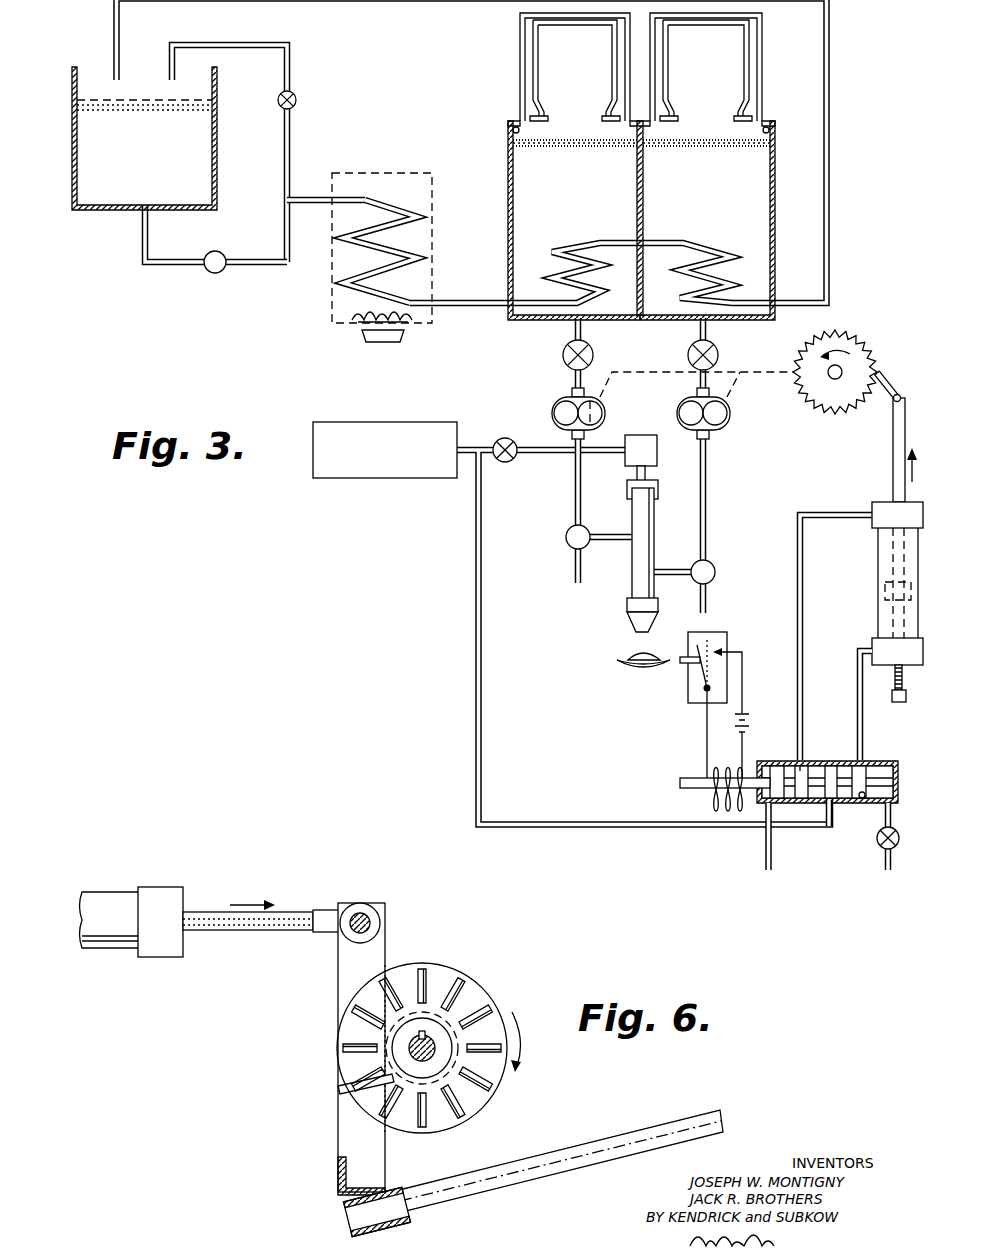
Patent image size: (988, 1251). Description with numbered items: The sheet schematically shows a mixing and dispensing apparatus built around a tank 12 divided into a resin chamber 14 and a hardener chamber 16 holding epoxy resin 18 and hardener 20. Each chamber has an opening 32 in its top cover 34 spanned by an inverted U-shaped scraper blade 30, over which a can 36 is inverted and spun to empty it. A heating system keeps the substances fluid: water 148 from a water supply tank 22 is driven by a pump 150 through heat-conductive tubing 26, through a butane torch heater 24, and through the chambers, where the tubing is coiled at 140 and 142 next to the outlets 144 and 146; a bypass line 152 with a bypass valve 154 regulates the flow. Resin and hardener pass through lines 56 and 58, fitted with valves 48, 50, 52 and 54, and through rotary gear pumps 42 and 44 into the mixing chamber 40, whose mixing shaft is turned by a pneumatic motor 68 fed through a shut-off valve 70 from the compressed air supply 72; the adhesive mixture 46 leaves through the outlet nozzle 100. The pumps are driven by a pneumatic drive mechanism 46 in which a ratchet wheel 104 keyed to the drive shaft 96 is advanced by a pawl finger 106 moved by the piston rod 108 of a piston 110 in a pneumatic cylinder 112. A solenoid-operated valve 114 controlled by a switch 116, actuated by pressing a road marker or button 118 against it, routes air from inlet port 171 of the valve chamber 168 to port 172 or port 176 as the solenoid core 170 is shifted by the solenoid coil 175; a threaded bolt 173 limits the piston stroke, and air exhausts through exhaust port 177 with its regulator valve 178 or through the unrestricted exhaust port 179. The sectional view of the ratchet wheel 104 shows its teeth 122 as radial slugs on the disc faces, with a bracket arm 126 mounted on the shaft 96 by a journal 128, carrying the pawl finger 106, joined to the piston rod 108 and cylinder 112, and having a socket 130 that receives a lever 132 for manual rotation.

In FIG. 3, the tank 12 is at (644, 220).
In FIG. 3, the resin chamber 14 is at (510, 207).
In FIG. 3, the hardener chamber 16 is at (775, 215).
In FIG. 3, the epoxy resin 18 is at (575, 178).
In FIG. 3, the hardener 20 is at (706, 178).
In FIG. 3, the water supply tank 22 is at (165, 138).
In FIG. 3, the butane torch heater 24 is at (432, 182).
In FIG. 3, the heat-conductive tubing 26 is at (272, 268).
In FIG. 3, the scraper blade 30 is at (535, 55).
In FIG. 3, the opening 32 is at (622, 120).
In FIG. 3, the top cover 34 is at (512, 130).
In FIG. 3, the can 36 is at (520, 40).
In FIG. 3, the mixing chamber 40 is at (631, 556).
In FIG. 3, the rotary gear pump 42 is at (555, 405).
In FIG. 3, the rotary gear pump 44 is at (732, 415).
In FIG. 3, the pneumatic drive system 46 is at (630, 655).
In FIG. 3, the resin shut-off valve 48 is at (593, 350).
In FIG. 3, the valve 50 is at (566, 540).
In FIG. 3, the valve 52 is at (718, 350).
In FIG. 3, the valve 54 is at (715, 570).
In FIG. 3, the resin line 56 is at (574, 480).
In FIG. 3, the hardener line 58 is at (648, 478).
In FIG. 3, the pneumatic motor 68 is at (640, 440).
In FIG. 3, the shut-off valve 70 is at (505, 438).
In FIG. 3, the compressed air supply 72 is at (322, 478).
In FIG. 3, the drive shaft 96 is at (842, 368).
In FIG. 6, the drive shaft 96 is at (432, 1042).
In FIG. 3, the outlet nozzle 100 is at (640, 625).
In FIG. 3, the ratchet wheel 104 is at (852, 333).
In FIG. 6, the ratchet wheel 104 is at (470, 978).
In FIG. 3, the pawl finger 106 is at (895, 385).
In FIG. 6, the pawl finger 106 is at (340, 1090).
In FIG. 3, the piston rod 108 is at (893, 460).
In FIG. 6, the piston rod 108 is at (245, 925).
In FIG. 3, the piston 110 is at (885, 591).
In FIG. 3, the pneumatic cylinder 112 is at (879, 613).
In FIG. 6, the pneumatic cylinder 112 is at (110, 895).
In FIG. 3, the solenoid-operated valve 114 is at (694, 790).
In FIG. 3, the switch 116 is at (690, 700).
In FIG. 3, the road marker or button 118 is at (638, 665).
In FIG. 6, the teeth 122 is at (455, 1135).
In FIG. 6, the bracket arm 126 is at (345, 965).
In FIG. 6, the journal 128 is at (340, 1018).
In FIG. 6, the socket 130 is at (405, 1222).
In FIG. 6, the lever 132 is at (560, 1150).
In FIG. 3, the coil 140 is at (566, 243).
In FIG. 3, the coil 142 is at (735, 275).
In FIG. 3, the outlet 144 is at (575, 325).
In FIG. 3, the outlet 146 is at (700, 325).
In FIG. 3, the water 148 is at (144, 124).
In FIG. 3, the pump 150 is at (208, 270).
In FIG. 3, the bypass line 152 is at (292, 140).
In FIG. 3, the bypass valve 154 is at (295, 90).
In FIG. 3, the solenoid valve chamber 168 is at (868, 800).
In FIG. 3, the solenoid core 170 is at (690, 785).
In FIG. 3, the inlet port 171 is at (830, 815).
In FIG. 3, the port 172 is at (800, 766).
In FIG. 3, the threaded bolt 173 is at (906, 684).
In FIG. 3, the solenoid coil 175 is at (720, 798).
In FIG. 3, the port 176 is at (852, 764).
In FIG. 3, the exhaust port 177 is at (898, 785).
In FIG. 3, the regulator valve 178 is at (880, 848).
In FIG. 3, the exhaust port 179 is at (765, 812).